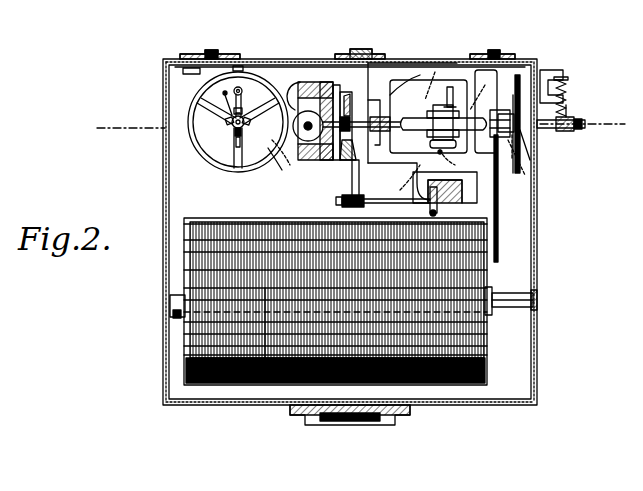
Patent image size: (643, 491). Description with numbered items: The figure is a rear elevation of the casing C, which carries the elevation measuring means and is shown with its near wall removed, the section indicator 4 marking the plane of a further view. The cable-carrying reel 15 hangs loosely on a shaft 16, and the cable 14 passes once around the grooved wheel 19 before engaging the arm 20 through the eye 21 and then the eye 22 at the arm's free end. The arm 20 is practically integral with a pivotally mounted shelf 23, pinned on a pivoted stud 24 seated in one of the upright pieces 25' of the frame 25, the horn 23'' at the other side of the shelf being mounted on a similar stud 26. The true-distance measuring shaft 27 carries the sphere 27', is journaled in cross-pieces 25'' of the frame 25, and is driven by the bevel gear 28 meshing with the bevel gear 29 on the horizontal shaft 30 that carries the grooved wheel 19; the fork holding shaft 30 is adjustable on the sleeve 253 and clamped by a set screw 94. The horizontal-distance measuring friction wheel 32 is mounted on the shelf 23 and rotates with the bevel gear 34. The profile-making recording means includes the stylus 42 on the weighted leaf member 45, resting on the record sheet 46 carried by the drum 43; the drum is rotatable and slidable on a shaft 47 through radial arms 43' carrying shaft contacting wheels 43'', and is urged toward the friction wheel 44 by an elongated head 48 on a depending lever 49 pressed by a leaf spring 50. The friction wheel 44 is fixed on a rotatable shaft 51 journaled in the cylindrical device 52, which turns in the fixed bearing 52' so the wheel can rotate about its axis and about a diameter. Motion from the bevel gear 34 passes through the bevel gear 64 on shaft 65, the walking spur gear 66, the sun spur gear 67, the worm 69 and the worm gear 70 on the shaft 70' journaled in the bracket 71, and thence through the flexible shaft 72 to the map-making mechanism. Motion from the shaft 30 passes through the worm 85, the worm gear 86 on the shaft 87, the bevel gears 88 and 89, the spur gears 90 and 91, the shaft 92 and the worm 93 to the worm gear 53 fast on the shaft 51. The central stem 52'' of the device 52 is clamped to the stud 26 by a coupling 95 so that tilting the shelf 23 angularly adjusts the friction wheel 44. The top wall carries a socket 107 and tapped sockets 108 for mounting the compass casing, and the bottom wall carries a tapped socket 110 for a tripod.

The casing C is at (163, 66).
The section line 4- 4 is at (108, 126).
The cable 14 is at (245, 378).
The cable-carrying reel 15 is at (487, 332).
The shaft 16 is at (508, 298).
The grooved wheel 19 is at (499, 210).
The arm 20 is at (500, 114).
The eye 21 is at (512, 148).
The eye 22 is at (520, 134).
The shelf 23 is at (444, 101).
The bearing frame 23'' is at (495, 108).
The pivoted stud 24 is at (518, 160).
The frame 25 is at (427, 118).
The upright pieces 25' is at (440, 118).
The cross-pieces 25'' is at (426, 112).
The sleeve 253 is at (402, 181).
The stud 26 is at (380, 131).
The true-distance measuring shaft 27 is at (508, 126).
The sphere 27' is at (405, 75).
The bevel gear 28 is at (452, 190).
The bevel gear 29 is at (442, 204).
The horizontal shaft 30 is at (384, 204).
The horizontal-distance measuring friction wheel 32 is at (410, 124).
The bevel gear 34 is at (443, 104).
The stylus 42 is at (240, 66).
The drum 43 is at (238, 151).
The radially arranged arms 43' is at (234, 174).
The shaft contacting wheels 43'' is at (220, 164).
The friction wheel 44 is at (290, 165).
The leaf member 45 is at (280, 66).
The record sheet 46 is at (192, 136).
The shaft 47 is at (236, 126).
The elongated head 48 is at (235, 120).
The depending lever 49 is at (243, 91).
The leaf spring 50 is at (222, 94).
The rotatable shaft 51 is at (311, 128).
The cylindrical device 52 is at (315, 141).
The fixed bearing 52' is at (314, 145).
The stem 52'' is at (412, 113).
The worm gear 53 is at (282, 170).
The bevel gear 64 is at (450, 86).
The shaft 65 is at (546, 128).
The walking spur gear 66 is at (541, 70).
The sun spur gear 67 is at (512, 133).
The worm 69 is at (576, 129).
The worm gear 70 is at (573, 114).
The shaft 70' is at (586, 97).
The bracket 71 is at (561, 80).
The flexible shaft 72 is at (568, 77).
The worm 85 is at (354, 207).
The worm gear 86 is at (336, 202).
The shaft 87 is at (352, 175).
The bevel gear 88 is at (352, 129).
The bevel gear 89 is at (350, 106).
The spur gear 90 is at (348, 161).
The spur gear 91 is at (350, 92).
The shaft 92 is at (337, 85).
The worm 93 is at (296, 84).
The set screw 94 is at (456, 165).
The coupling 95 is at (374, 117).
The socket 107 is at (360, 52).
The tapped sockets 108 is at (212, 52).
The tapped socket 110 is at (360, 425).